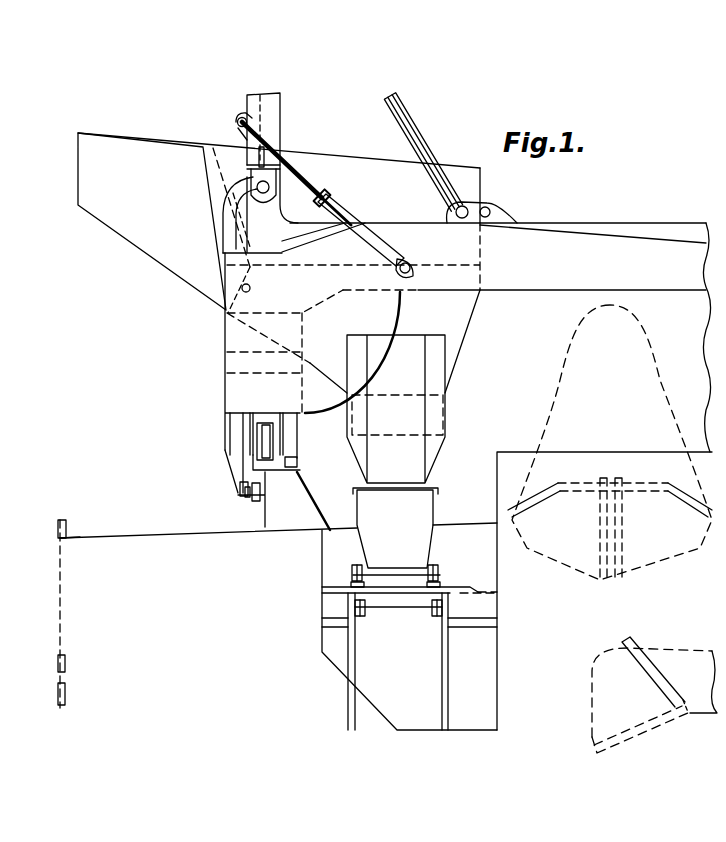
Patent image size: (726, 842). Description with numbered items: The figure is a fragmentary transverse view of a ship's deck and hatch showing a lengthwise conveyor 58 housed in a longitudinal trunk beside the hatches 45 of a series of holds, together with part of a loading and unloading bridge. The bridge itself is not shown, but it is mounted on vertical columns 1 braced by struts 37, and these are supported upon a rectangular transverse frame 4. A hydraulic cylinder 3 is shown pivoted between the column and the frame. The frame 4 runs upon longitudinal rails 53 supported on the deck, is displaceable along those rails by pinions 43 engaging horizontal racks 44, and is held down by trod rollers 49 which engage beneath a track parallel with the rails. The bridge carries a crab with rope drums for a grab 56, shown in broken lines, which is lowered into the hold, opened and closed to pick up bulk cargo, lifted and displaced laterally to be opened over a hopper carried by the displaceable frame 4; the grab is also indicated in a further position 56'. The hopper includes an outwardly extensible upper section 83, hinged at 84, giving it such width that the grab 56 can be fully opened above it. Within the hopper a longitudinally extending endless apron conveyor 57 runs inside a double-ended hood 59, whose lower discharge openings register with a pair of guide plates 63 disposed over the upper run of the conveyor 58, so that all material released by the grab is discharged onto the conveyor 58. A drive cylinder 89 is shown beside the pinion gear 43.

The vertical columns 1 is at (253, 104).
The hydraulic cylinder 3 is at (352, 212).
The rectangular transverse frame 4 is at (469, 310).
The struts 37 is at (418, 131).
The outwardly extensible upper section 83 is at (279, 221).
The hinge 84 is at (252, 288).
The double-ended hood 59 is at (428, 343).
The endless apron conveyor 57 is at (447, 418).
The grab 56 is at (610, 442).
The bell housing 56' is at (654, 678).
The hatches 45 is at (516, 470).
The cylinder 89 is at (270, 436).
The pinions 43 is at (292, 458).
The horizontal racks 44 is at (300, 470).
The longitudinal rails 53 is at (243, 462).
The trod rollers 49 is at (253, 497).
The guide plates 63 is at (432, 541).
The conveyor 58 is at (395, 607).